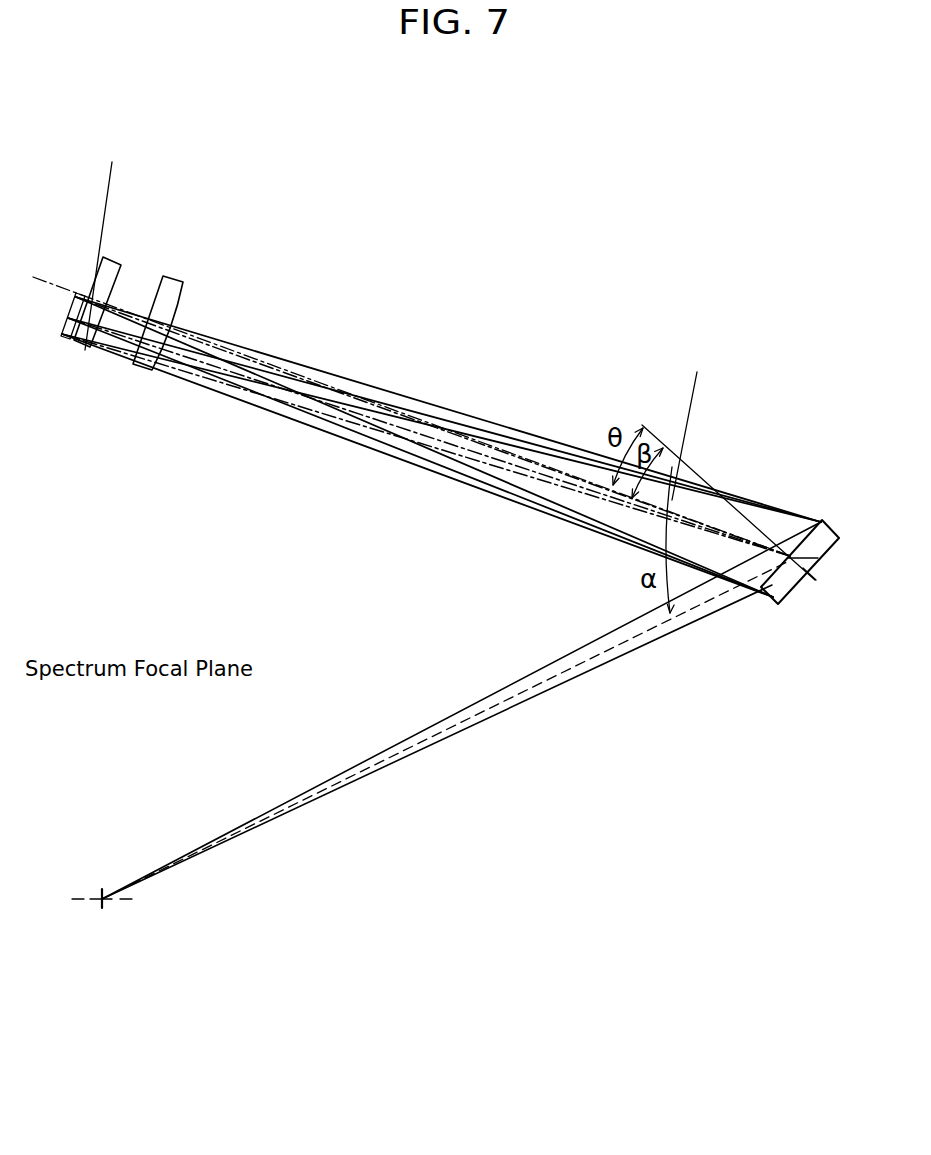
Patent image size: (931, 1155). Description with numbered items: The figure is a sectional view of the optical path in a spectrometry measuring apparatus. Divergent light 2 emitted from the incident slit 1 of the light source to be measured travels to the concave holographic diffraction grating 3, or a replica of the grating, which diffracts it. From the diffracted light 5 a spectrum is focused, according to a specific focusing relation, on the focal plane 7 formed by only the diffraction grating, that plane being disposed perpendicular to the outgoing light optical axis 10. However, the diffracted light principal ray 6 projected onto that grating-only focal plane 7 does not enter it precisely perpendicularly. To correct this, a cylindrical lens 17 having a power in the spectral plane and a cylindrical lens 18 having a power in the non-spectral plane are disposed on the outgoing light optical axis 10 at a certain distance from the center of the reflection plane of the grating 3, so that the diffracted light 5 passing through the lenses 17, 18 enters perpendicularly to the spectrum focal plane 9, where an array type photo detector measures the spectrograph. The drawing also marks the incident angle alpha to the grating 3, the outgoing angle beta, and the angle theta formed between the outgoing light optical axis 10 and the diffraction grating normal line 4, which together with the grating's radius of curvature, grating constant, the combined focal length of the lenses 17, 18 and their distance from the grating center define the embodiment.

The incident slit 1 is at (102, 906).
The divergent light 2 is at (417, 737).
The concave holographic diffraction grating 3 is at (790, 575).
The diffraction grating normal line 4 is at (695, 443).
The diffracted light 5 is at (570, 508).
The diffracted light principal ray 6 is at (513, 472).
The focal plane formed by only the diffraction grating 7 is at (62, 336).
The spectrum focal plane 9 is at (217, 223).
The outgoing light optical axis 10 is at (55, 283).
The cylindrical lens 17 is at (173, 288).
The cylindrical lens 18 is at (117, 257).